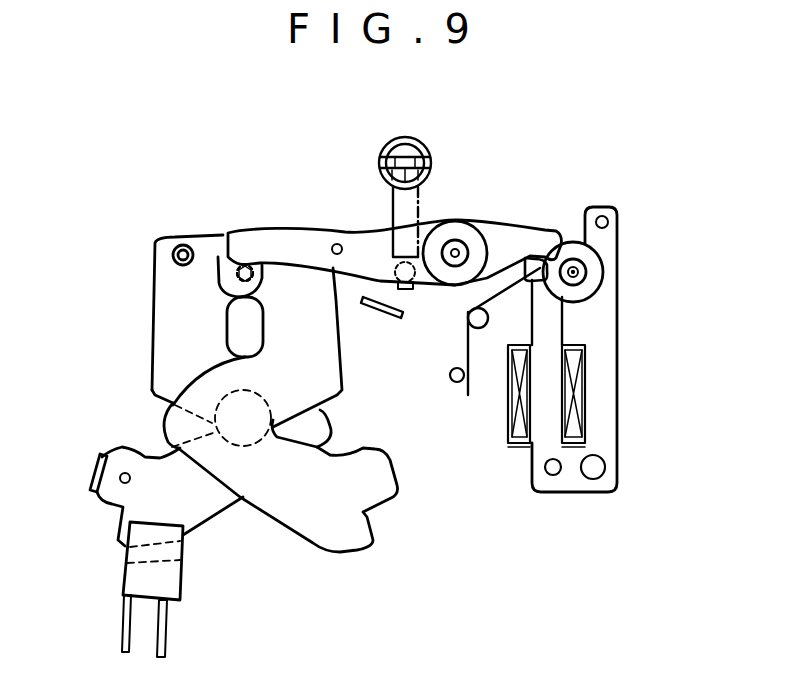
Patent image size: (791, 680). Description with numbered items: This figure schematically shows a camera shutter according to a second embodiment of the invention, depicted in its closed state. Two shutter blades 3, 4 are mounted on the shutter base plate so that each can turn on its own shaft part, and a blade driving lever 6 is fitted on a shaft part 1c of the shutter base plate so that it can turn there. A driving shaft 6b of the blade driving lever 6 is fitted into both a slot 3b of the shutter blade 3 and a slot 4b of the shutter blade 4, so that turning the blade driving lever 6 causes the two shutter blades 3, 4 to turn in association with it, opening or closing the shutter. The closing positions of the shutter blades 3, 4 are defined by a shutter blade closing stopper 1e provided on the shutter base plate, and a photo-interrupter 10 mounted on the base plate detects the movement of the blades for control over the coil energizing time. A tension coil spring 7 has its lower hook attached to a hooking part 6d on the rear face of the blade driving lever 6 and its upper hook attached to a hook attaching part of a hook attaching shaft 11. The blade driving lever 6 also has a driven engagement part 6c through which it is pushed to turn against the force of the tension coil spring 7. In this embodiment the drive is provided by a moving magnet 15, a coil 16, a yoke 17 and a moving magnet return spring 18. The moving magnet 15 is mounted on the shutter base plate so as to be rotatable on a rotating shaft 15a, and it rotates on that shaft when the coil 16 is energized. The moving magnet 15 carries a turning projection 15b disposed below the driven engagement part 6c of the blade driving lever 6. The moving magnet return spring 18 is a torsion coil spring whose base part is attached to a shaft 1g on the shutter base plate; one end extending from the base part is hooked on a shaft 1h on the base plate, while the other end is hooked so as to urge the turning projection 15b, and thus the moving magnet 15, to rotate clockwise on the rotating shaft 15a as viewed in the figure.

The shutter blade 3 is at (165, 323).
The shutter blade 4 is at (350, 528).
The blade driving lever 6 is at (287, 242).
The tension coil spring 7 is at (383, 217).
The hook attaching shaft 11 is at (428, 150).
The shaft part 1c is at (458, 249).
The shutter blade closing stopper 1e is at (98, 473).
The shaft 1g is at (468, 316).
The shaft 1h is at (455, 383).
The photo-interrupter 10 is at (137, 573).
The slot 3b is at (220, 232).
The slot 4b is at (240, 262).
The driving shaft 6b is at (228, 240).
The driven engagement part 6c is at (527, 262).
The hooking part 6d is at (407, 290).
The moving magnet 15 is at (585, 282).
The rotating shaft 15a is at (573, 272).
The turning projection 15b is at (535, 258).
The coil 16 is at (582, 390).
The yoke 17 is at (607, 442).
The moving magnet return spring 18 is at (468, 362).